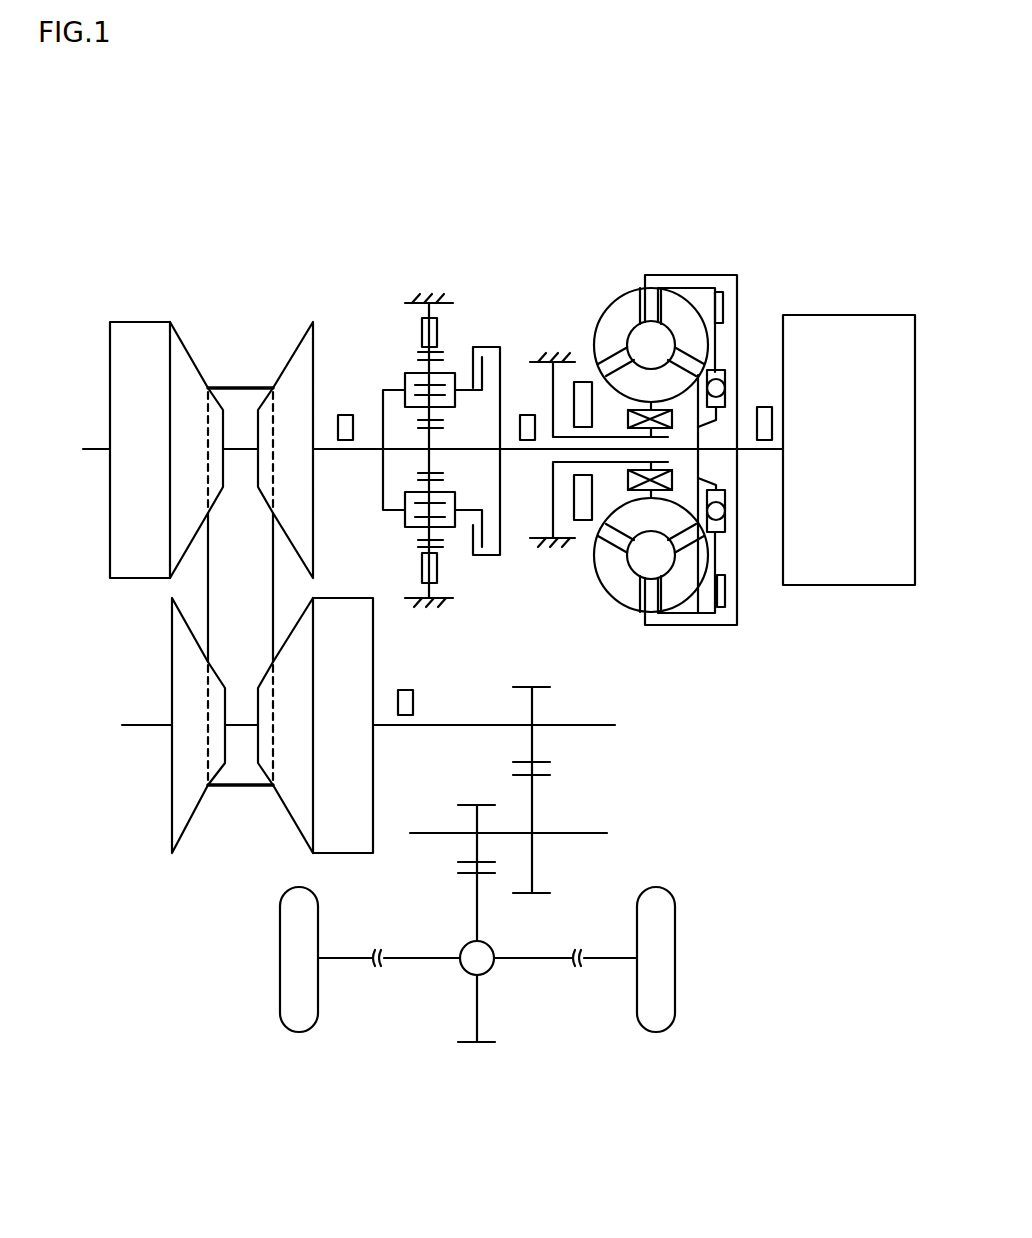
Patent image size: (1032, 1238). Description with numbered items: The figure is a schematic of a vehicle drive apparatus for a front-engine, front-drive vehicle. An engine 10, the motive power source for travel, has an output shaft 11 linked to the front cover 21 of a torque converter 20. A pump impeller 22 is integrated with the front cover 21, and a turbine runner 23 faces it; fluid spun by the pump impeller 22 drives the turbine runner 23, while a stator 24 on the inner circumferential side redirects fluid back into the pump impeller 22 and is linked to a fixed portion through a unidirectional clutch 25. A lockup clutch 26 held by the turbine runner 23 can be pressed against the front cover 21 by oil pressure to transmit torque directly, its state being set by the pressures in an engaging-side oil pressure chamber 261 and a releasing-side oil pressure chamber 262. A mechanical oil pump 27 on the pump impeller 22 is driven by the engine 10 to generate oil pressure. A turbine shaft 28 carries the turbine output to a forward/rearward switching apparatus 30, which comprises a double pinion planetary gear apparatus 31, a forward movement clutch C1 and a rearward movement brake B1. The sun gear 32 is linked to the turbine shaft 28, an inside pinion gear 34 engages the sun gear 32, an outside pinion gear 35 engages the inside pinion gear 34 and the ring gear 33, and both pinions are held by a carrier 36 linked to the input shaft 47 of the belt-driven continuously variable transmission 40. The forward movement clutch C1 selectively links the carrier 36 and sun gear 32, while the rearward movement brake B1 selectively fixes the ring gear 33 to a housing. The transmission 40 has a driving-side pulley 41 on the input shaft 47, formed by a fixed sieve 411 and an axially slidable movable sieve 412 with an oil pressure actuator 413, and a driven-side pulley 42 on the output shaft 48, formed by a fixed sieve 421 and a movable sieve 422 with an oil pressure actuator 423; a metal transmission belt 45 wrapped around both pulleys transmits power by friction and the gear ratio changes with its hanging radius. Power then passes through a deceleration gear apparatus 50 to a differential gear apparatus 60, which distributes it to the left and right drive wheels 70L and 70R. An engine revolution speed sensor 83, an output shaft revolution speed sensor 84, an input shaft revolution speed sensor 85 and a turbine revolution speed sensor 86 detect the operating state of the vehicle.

The engine 10 is at (849, 394).
The output shaft 11 is at (760, 491).
The torque converter 20 is at (690, 441).
The front cover 21 is at (714, 414).
The pump impeller 22 is at (623, 466).
The turbine runner 23 is at (662, 606).
The stator 24 is at (631, 537).
The unidirectional clutch 25 is at (602, 532).
The lockup clutch 26 is at (742, 536).
The engaging-side oil pressure chamber 261 is at (680, 536).
The releasing-side oil pressure chamber 262 is at (773, 561).
The mechanical oil pump 27 is at (575, 397).
The turbine shaft 28 is at (590, 450).
The forward/rearward switching apparatus 30 is at (422, 389).
The double pinion planetary gear apparatus 31 is at (403, 276).
The sun gear 32 is at (401, 525).
The ring gear 33 is at (459, 584).
The inside pinion gear 34 is at (391, 357).
The outside pinion gear 35 is at (380, 392).
The carrier 36 is at (456, 499).
The forward movement clutch C1 is at (455, 333).
The rearward movement brake B1 is at (485, 415).
The belt-driven continuously variable transmission 40 is at (232, 580).
The driving-side pulley 41 is at (167, 390).
The fixed sieve 411 is at (287, 413).
The movable sieve 412 is at (187, 413).
The oil pressure actuator 413 is at (94, 450).
The driven-side pulley 42 is at (259, 792).
The fixed sieve 421 is at (149, 725).
The movable sieve 422 is at (261, 737).
The oil pressure actuator 423 is at (379, 725).
The transmission belt 45 is at (240, 549).
The input shaft 47 is at (410, 487).
The output shaft 48 is at (368, 757).
The deceleration gear apparatus 50 is at (533, 814).
The differential gear apparatus 60 is at (477, 991).
The left drive wheel 70L is at (253, 959).
The right drive wheel 70R is at (709, 959).
The engine revolution speed sensor 83 is at (772, 349).
The output shaft revolution speed sensor 84 is at (437, 686).
The input shaft revolution speed sensor 85 is at (336, 395).
The turbine revolution speed sensor 86 is at (522, 377).